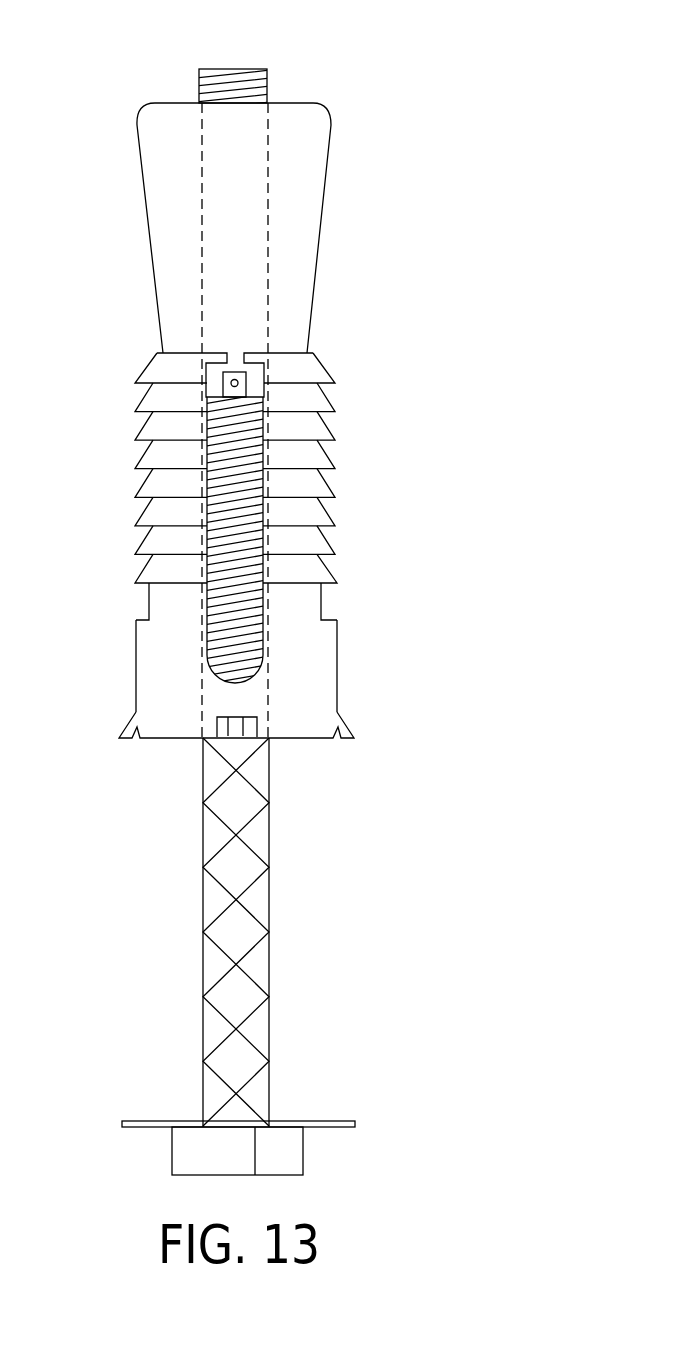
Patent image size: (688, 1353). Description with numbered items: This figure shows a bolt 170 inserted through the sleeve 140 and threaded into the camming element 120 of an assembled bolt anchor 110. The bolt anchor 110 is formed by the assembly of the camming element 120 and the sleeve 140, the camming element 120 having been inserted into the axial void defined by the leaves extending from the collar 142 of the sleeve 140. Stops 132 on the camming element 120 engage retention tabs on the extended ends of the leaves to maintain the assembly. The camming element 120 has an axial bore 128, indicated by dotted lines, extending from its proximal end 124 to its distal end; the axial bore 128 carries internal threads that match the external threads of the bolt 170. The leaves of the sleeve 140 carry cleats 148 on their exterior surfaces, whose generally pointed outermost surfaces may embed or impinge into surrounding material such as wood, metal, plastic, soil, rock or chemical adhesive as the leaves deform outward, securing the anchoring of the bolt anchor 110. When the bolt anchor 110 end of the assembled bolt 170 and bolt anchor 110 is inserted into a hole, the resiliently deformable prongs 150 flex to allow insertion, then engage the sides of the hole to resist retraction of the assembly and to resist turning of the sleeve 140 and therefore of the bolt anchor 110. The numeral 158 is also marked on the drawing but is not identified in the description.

The bolt anchor 110 is at (437, 292).
The camming element 120 is at (343, 290).
The proximal end 124 is at (325, 105).
The axial bore 128 is at (198, 245).
The stops 132 is at (222, 380).
The sleeve 140 is at (357, 437).
The collar 142 is at (135, 667).
The cleats 148 is at (138, 434).
The resiliently deformable prongs 150 is at (119, 738).
The shoulder 158 is at (149, 603).
The bolt 170 is at (203, 913).